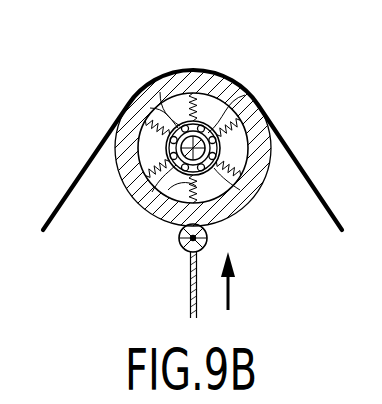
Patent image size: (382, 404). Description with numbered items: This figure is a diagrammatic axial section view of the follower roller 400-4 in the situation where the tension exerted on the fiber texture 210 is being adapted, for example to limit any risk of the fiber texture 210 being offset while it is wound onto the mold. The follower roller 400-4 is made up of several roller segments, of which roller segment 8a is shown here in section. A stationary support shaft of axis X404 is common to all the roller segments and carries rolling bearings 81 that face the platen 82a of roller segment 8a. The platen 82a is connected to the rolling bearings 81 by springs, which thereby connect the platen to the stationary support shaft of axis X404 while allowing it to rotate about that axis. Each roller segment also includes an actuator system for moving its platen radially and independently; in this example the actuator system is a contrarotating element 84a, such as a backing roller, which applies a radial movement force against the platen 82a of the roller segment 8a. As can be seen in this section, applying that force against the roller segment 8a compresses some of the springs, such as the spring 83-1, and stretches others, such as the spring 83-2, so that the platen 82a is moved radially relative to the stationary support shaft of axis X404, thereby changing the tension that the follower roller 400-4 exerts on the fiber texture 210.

The rolling bearings 81 is at (138, 105).
The platen 82a is at (188, 73).
The spring 83-1 is at (177, 188).
The spring 83-2 is at (218, 88).
The axis of the stationary support shaft X404 is at (258, 100).
The fiber texture 210 is at (55, 212).
The roller segment 8a is at (262, 196).
The contrarotating element 84a is at (184, 252).
The follower roller 400-4 is at (105, 235).